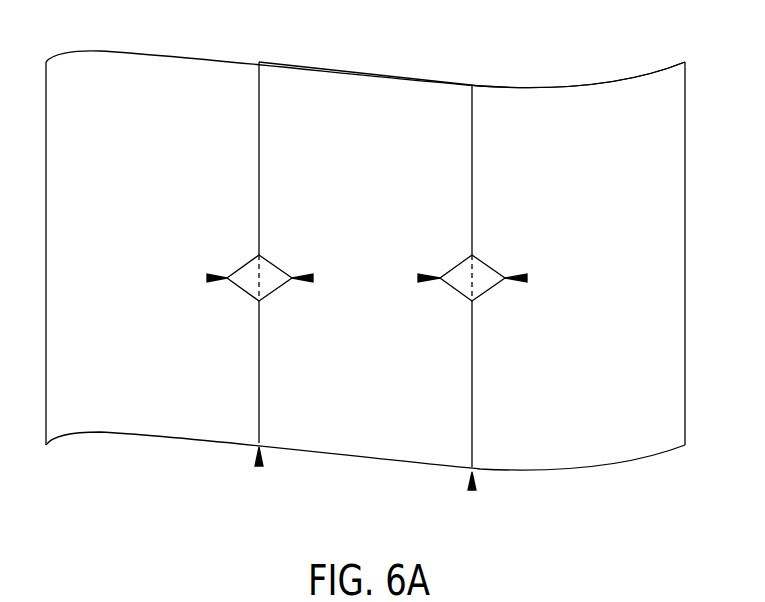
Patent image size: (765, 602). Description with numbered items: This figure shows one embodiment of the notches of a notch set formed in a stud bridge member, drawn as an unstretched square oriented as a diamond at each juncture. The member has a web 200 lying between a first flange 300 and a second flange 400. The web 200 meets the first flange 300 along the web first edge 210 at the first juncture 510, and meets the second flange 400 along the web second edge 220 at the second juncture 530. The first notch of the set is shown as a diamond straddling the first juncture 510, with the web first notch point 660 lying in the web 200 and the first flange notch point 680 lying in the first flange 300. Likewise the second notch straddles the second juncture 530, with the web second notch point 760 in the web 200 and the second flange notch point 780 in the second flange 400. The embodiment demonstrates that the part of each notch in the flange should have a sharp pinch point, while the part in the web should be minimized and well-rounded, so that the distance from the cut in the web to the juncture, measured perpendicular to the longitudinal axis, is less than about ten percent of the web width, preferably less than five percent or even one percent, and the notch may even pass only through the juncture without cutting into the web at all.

The second flange 400 is at (135, 70).
The web 200 is at (375, 90).
The first flange 300 is at (587, 95).
The web second edge 220 is at (262, 85).
The web first edge 210 is at (468, 100).
The second juncture 530 is at (259, 466).
The first juncture 510 is at (472, 490).
The second flange notch point 780 is at (207, 278).
The web second notch point 760 is at (313, 278).
The web first notch point 660 is at (418, 278).
The first flange notch point 680 is at (527, 278).